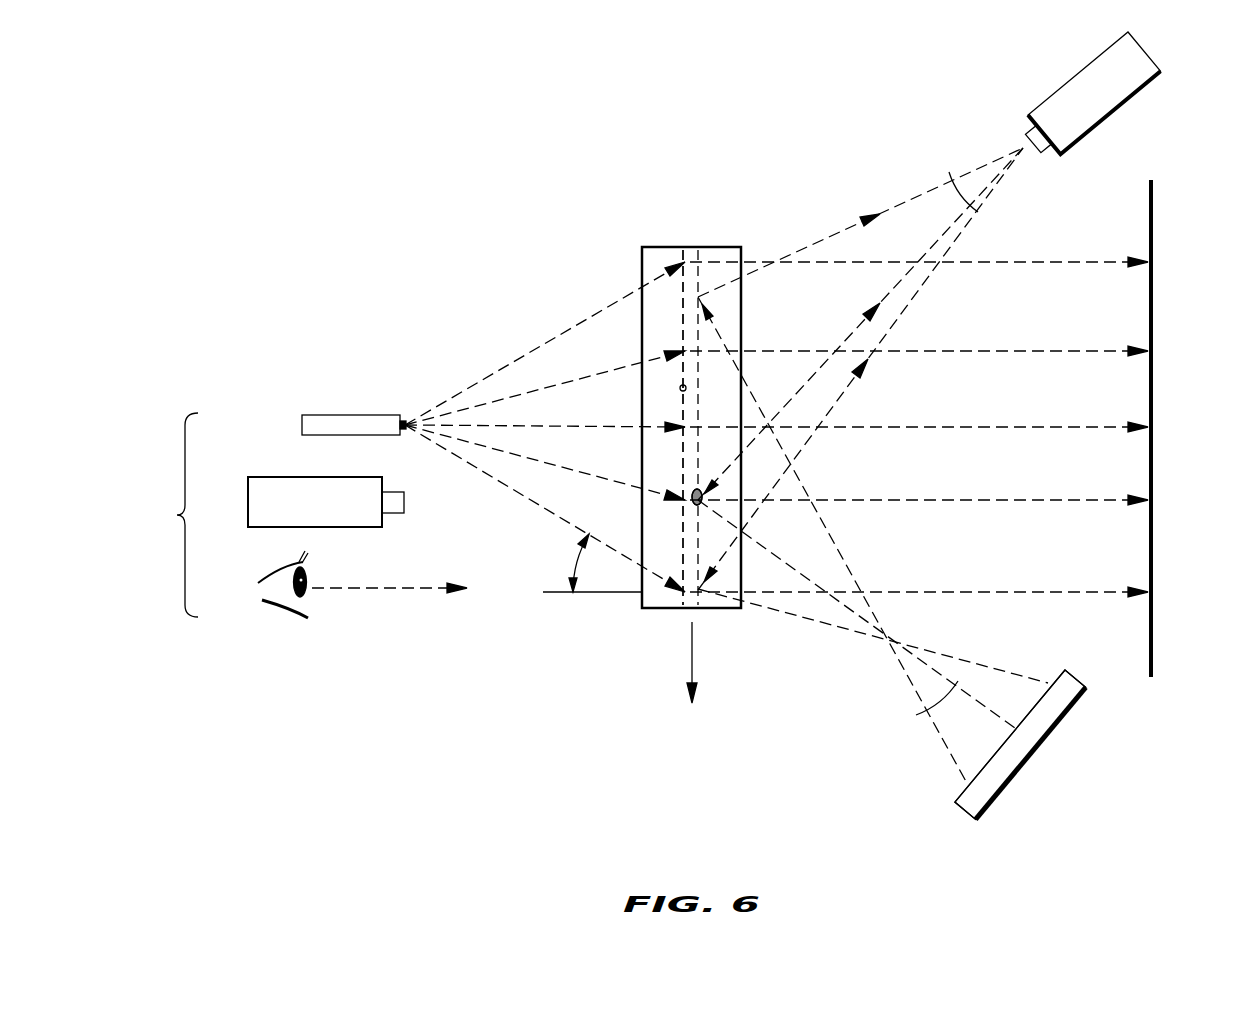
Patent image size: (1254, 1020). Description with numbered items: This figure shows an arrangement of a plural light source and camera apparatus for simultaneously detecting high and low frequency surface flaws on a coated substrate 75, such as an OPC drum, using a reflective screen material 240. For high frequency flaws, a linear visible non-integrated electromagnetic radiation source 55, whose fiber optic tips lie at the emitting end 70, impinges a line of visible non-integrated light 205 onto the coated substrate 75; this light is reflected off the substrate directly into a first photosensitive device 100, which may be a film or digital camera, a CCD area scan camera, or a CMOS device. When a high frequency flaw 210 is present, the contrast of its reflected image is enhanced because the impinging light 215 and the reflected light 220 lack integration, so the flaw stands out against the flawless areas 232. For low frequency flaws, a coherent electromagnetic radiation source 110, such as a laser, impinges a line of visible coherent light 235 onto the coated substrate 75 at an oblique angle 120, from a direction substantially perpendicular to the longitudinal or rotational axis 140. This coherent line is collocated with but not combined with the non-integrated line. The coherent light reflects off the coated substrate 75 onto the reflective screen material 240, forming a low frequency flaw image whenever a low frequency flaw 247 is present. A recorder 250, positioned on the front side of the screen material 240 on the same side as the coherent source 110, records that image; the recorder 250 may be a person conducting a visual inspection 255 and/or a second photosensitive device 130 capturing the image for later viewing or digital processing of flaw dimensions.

The linear visible non-integrated electromagnetic radiation source 55 is at (1000, 772).
The emitting end 70 is at (1020, 744).
The coated substrate 75 is at (684, 431).
The first photosensitive device 100 is at (1060, 107).
The coherent electromagnetic radiation source 110 is at (305, 422).
The oblique angle 120 is at (592, 563).
The second photosensitive device 130 is at (250, 507).
The longitudinal or rotational axis 140 is at (690, 662).
The line of visible non-integrated light 205 is at (699, 602).
The high frequency flaw 210 is at (692, 490).
The impinging light 215 is at (912, 732).
The reflected light 220 is at (946, 172).
The flawless areas 232 is at (650, 302).
The line of visible coherent light 235 is at (684, 602).
The reflective screen material 240 is at (1150, 220).
The low frequency flaw 247 is at (680, 388).
The recorder 250 is at (167, 528).
The visual inspection 255 is at (290, 600).